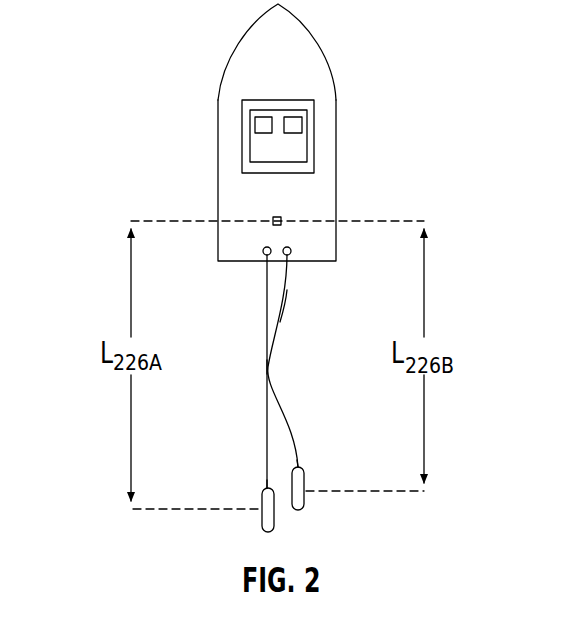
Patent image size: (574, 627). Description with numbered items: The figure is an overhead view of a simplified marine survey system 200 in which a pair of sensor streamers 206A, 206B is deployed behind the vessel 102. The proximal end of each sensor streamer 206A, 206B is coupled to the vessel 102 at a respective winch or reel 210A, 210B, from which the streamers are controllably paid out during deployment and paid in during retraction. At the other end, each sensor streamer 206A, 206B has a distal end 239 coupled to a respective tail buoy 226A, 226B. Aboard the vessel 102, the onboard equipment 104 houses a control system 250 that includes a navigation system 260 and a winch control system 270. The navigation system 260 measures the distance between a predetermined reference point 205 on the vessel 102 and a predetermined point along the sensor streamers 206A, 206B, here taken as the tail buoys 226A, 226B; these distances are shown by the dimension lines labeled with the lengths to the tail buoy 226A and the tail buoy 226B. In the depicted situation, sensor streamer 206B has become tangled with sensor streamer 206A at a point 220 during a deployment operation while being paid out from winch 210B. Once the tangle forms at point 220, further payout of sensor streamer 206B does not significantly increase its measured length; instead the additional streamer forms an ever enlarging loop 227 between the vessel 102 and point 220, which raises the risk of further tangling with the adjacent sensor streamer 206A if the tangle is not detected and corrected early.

The marine survey system 200 is at (102, 13).
The vessel 102 is at (251, 132).
The onboard equipment 104 is at (327, 120).
The control system 250 is at (228, 135).
The navigation system 260 is at (212, 106).
The winch control system 270 is at (348, 144).
The reference point 205 is at (216, 197).
The winch 210A is at (211, 267).
The winch 210B is at (344, 267).
The sensor streamer 206A is at (213, 371).
The sensor streamer 206B is at (324, 361).
The loop 227 is at (329, 301).
The point 220 is at (222, 354).
The tail buoy 226A is at (317, 520).
The tail buoy 226B is at (346, 482).
The distal end 239 is at (282, 458).